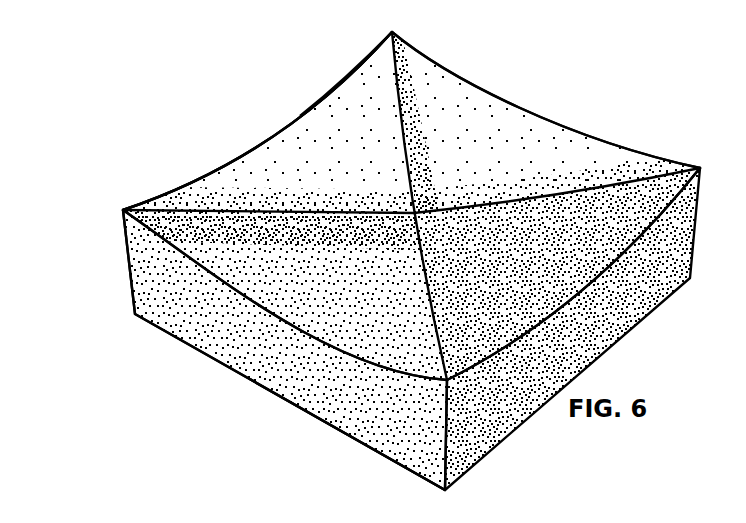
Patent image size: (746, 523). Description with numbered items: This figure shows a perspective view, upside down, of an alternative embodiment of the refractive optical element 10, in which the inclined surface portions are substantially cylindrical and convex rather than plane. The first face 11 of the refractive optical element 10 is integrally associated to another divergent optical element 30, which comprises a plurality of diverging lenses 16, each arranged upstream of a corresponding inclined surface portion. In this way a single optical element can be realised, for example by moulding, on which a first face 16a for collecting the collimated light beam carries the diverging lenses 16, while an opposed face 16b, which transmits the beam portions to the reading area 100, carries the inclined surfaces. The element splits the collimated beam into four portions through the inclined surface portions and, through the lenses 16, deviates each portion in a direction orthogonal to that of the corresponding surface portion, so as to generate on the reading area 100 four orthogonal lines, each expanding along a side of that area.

The refractive optical element 10 is at (186, 361).
The first face 11 is at (128, 264).
The diverging lenses 16 is at (293, 148).
The first face for collecting the collimated light beam 16a is at (327, 97).
The opposed face for transmitting the beam portions 16b is at (320, 423).
The divergent optical element 30 is at (208, 167).
The reading area 100 is at (723, 522).